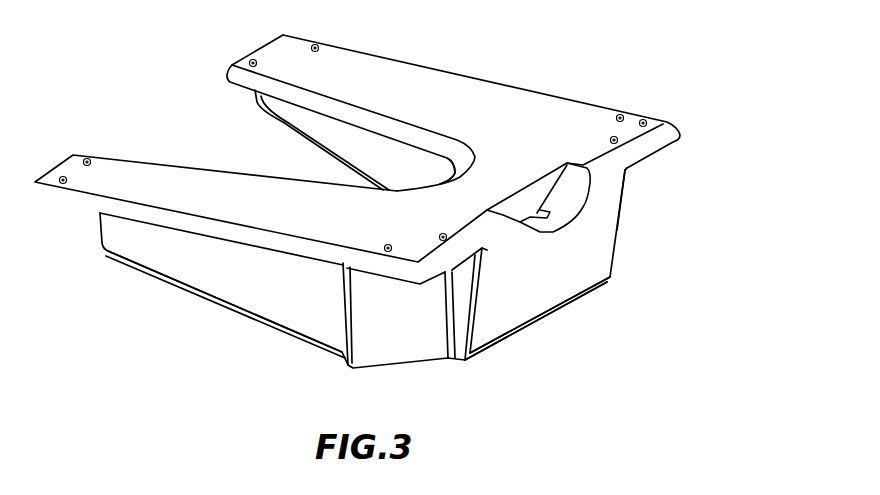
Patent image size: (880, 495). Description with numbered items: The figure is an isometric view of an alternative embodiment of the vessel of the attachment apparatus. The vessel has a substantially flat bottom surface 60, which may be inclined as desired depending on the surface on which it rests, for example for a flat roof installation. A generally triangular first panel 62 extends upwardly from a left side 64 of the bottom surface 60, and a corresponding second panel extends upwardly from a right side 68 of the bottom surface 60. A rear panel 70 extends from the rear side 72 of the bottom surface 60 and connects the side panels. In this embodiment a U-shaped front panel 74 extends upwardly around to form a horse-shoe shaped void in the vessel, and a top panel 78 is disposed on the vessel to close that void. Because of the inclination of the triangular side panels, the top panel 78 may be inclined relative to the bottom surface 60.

The bottom surface 60 is at (225, 303).
The first panel 62 is at (162, 250).
The left side 64 is at (303, 308).
The right side 68 is at (627, 192).
The rear panel 70 is at (592, 243).
The rear side 72 is at (537, 327).
The U-shaped front panel 74 is at (330, 133).
The top panel 78 is at (517, 107).